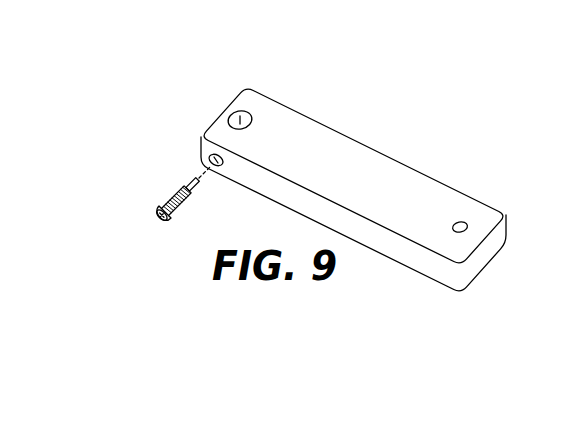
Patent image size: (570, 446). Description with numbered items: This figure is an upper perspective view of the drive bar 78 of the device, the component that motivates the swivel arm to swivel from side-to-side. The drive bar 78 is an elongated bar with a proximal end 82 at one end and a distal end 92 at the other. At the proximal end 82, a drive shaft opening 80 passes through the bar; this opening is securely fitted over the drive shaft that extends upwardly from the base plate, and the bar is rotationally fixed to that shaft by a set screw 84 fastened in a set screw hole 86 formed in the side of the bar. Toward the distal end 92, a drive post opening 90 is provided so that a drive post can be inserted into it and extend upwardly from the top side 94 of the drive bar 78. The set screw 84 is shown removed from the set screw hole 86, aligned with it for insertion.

The drive bar 78 is at (378, 152).
The drive shaft opening 80 is at (238, 111).
The proximal end 82 is at (250, 83).
The set screw 84 is at (179, 185).
The set screw hole 86 is at (209, 157).
The drive post opening 90 is at (460, 222).
The distal end 92 is at (408, 267).
The top side 94 is at (347, 176).